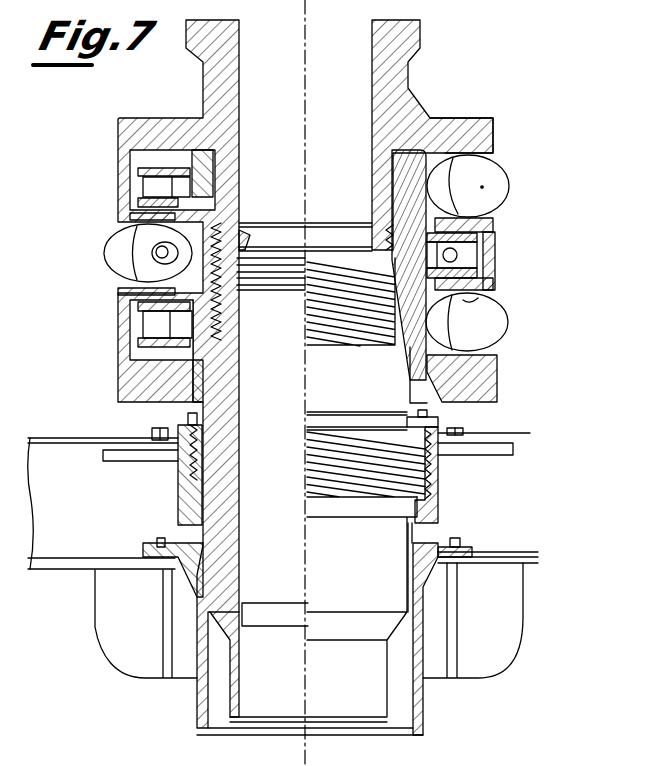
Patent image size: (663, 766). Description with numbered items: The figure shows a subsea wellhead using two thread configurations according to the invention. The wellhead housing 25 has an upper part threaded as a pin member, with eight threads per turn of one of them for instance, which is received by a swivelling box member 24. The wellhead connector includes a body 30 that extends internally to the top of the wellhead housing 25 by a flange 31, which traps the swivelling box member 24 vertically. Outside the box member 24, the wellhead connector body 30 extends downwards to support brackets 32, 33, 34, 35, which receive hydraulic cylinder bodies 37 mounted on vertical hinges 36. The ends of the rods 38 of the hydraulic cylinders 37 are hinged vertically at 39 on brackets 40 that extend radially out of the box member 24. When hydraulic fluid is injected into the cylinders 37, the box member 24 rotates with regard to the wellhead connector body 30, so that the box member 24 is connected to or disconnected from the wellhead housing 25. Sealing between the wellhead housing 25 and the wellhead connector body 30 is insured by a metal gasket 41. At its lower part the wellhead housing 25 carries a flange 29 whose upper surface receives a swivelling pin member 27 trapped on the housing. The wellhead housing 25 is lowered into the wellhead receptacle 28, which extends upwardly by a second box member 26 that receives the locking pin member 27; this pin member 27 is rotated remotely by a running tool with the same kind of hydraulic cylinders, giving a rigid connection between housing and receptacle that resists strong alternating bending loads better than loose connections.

The box member 24 is at (490, 233).
The wellhead housing 25 is at (223, 336).
The box member 26 is at (427, 497).
The pin member 27 is at (182, 467).
The wellhead receptacle 28 is at (498, 557).
The flange 29 is at (353, 505).
The wellhead connector body 30 is at (430, 84).
The flange 31 is at (393, 212).
The bracket 32 is at (463, 132).
The bracket 33 is at (477, 382).
The bracket 34 is at (138, 218).
The bracket 35 is at (120, 291).
The vertical hinge 36 is at (478, 333).
The hydraulic cylinder body 37 is at (115, 252).
The rod 38 is at (160, 247).
The vertical hinge 39 is at (157, 325).
The bracket 40 is at (163, 167).
The metal gasket 41 is at (250, 234).